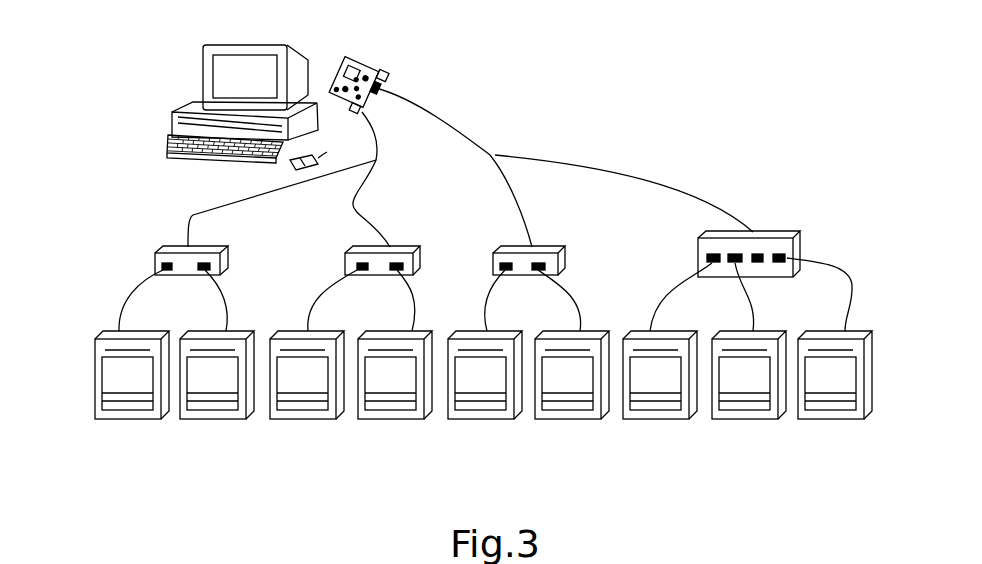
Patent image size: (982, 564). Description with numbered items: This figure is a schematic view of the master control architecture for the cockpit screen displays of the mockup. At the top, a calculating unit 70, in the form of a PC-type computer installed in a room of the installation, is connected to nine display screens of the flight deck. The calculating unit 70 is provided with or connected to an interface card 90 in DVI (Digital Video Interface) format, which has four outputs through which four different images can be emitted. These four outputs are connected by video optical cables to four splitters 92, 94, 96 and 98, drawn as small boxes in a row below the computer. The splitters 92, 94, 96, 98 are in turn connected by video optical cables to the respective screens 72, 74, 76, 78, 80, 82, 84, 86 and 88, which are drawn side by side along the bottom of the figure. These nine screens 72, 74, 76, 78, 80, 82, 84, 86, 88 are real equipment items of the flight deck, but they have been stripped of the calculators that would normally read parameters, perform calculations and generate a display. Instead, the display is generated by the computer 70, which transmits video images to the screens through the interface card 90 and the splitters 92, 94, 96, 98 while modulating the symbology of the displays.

The calculating unit 70 is at (202, 58).
The interface card 90 is at (362, 62).
The splitter 92 is at (168, 247).
The splitter 94 is at (370, 243).
The splitter 96 is at (517, 243).
The splitter 98 is at (698, 247).
The screen 72 is at (135, 424).
The screen 74 is at (212, 422).
The screen 76 is at (307, 422).
The screen 78 is at (395, 422).
The screen 80 is at (480, 422).
The screen 82 is at (573, 422).
The screen 84 is at (663, 422).
The screen 86 is at (752, 422).
The screen 88 is at (837, 422).